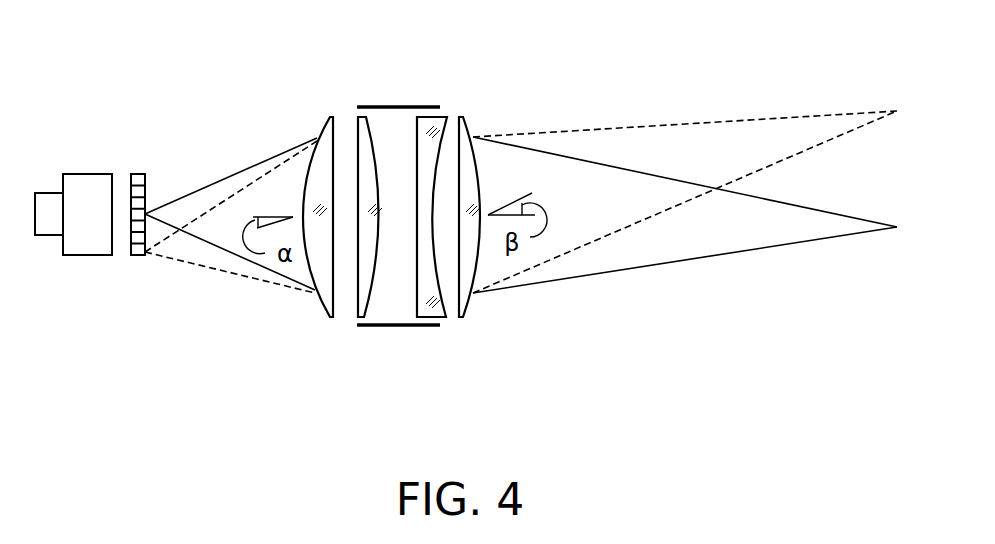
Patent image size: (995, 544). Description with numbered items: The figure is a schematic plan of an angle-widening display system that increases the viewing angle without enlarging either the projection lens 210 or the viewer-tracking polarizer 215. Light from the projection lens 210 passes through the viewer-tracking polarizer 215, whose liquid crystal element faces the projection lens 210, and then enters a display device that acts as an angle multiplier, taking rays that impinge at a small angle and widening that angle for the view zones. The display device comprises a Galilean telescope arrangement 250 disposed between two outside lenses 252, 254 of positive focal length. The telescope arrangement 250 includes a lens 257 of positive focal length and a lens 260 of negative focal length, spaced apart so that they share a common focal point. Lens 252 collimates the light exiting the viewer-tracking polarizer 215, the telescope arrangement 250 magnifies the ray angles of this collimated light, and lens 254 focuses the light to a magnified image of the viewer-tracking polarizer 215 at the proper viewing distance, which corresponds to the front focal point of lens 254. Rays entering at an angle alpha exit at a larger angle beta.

The projection lens 210 is at (80, 174).
The viewer-tracking polarizer 215 is at (136, 174).
The Galilean telescope arrangement 250 is at (385, 340).
The lens 252 is at (332, 113).
The lens 254 is at (458, 113).
The lens 257 is at (369, 138).
The lens 260 is at (415, 138).